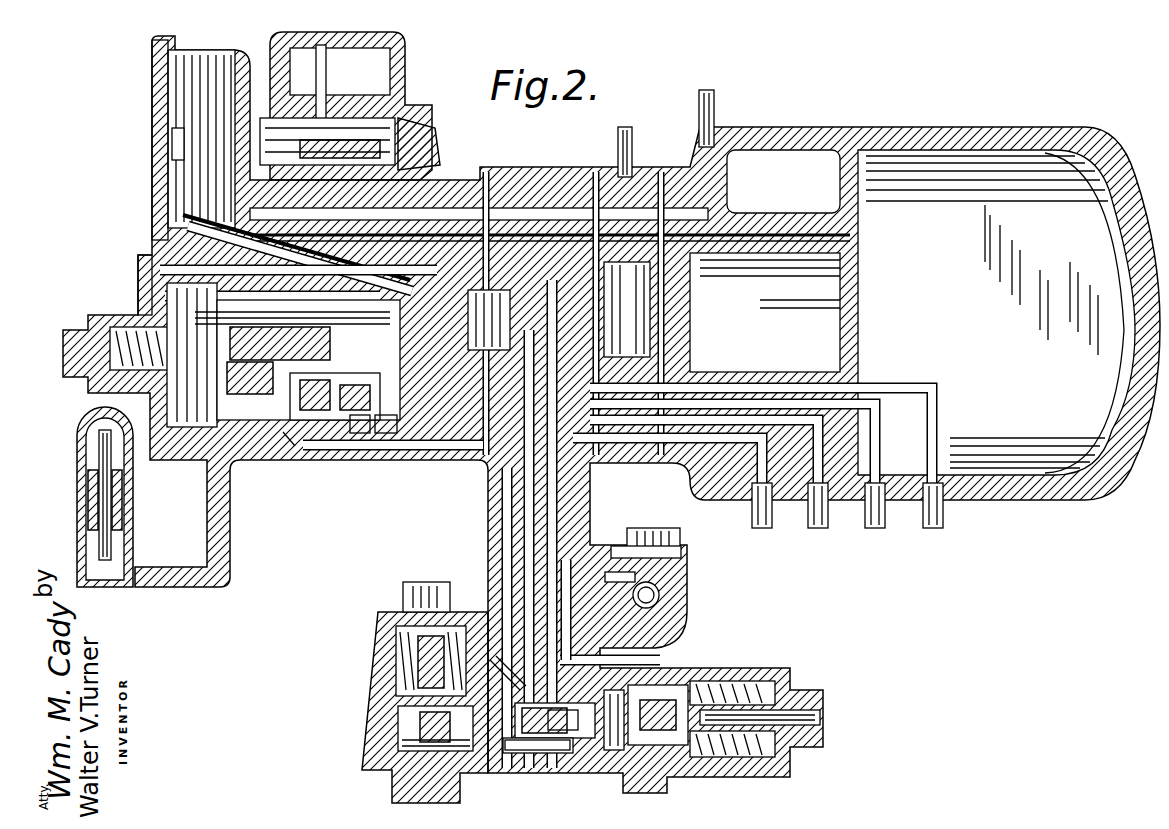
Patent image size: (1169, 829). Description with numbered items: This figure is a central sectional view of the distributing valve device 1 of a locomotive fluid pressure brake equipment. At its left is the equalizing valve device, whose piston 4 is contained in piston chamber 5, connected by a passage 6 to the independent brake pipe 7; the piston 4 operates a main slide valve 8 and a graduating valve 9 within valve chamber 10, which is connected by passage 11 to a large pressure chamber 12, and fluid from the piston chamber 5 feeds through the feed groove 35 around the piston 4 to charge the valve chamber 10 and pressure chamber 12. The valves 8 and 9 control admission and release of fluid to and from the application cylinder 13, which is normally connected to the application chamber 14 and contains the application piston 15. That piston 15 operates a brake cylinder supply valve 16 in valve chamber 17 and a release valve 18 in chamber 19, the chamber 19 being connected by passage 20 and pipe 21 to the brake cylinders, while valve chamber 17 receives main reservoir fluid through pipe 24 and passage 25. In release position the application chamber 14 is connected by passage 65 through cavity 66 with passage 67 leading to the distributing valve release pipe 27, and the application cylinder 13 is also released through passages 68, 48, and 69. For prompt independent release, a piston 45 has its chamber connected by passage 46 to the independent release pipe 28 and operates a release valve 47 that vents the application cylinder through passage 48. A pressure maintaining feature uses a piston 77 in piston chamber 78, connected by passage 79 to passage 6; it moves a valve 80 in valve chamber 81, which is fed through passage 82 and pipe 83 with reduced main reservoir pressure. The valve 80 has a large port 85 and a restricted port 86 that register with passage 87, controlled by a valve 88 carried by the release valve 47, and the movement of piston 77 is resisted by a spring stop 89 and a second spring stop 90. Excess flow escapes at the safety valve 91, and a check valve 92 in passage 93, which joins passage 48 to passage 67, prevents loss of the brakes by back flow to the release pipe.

The distributing valve device 1 is at (865, 135).
The piston 4 is at (210, 387).
The piston chamber 5 is at (157, 312).
The passage 6 is at (188, 320).
The independent brake pipe 7 is at (873, 517).
The main slide valve 8 is at (240, 388).
The graduating valve 9 is at (255, 353).
The valve chamber 10 is at (308, 322).
The passage 11 is at (390, 255).
The pressure chamber 12 is at (1003, 180).
The application cylinder 13 is at (160, 178).
The application chamber 14 is at (820, 297).
The application piston 15 is at (205, 90).
The brake cylinder supply valve 16 is at (385, 75).
The valve chamber 17 is at (375, 52).
The release valve 18 is at (268, 162).
The chamber 19 is at (437, 150).
The passage 20 is at (515, 215).
The pipe 21 is at (710, 120).
The pipe 24 is at (943, 515).
The passage 25 is at (935, 405).
The distributing valve release pipe 27 is at (760, 522).
The independent release pipe 28 is at (823, 527).
The feed groove 35 is at (200, 270).
The piston 45 is at (373, 750).
The passage 46 is at (800, 420).
The release valve 47 is at (383, 683).
The passage 48 is at (283, 434).
The passage 65 is at (387, 434).
The cavity 66 is at (313, 387).
The passage 67 is at (347, 450).
The passage 68 is at (185, 220).
The passage 69 is at (358, 434).
The piston 77 is at (605, 775).
The piston chamber 78 is at (660, 690).
The passage 79 is at (637, 663).
The valve 80 is at (568, 725).
The valve chamber 81 is at (563, 673).
The passage 82 is at (573, 553).
The pipe 83 is at (627, 142).
The large port 85 is at (560, 738).
The restricted port 86 is at (505, 662).
The passage 87 is at (543, 757).
The valve 88 is at (380, 650).
The spring stop 89 is at (742, 680).
The second spring stop 90 is at (710, 680).
The safety valve 91 is at (78, 468).
The check valve 92 is at (657, 586).
The passage 93 is at (560, 497).